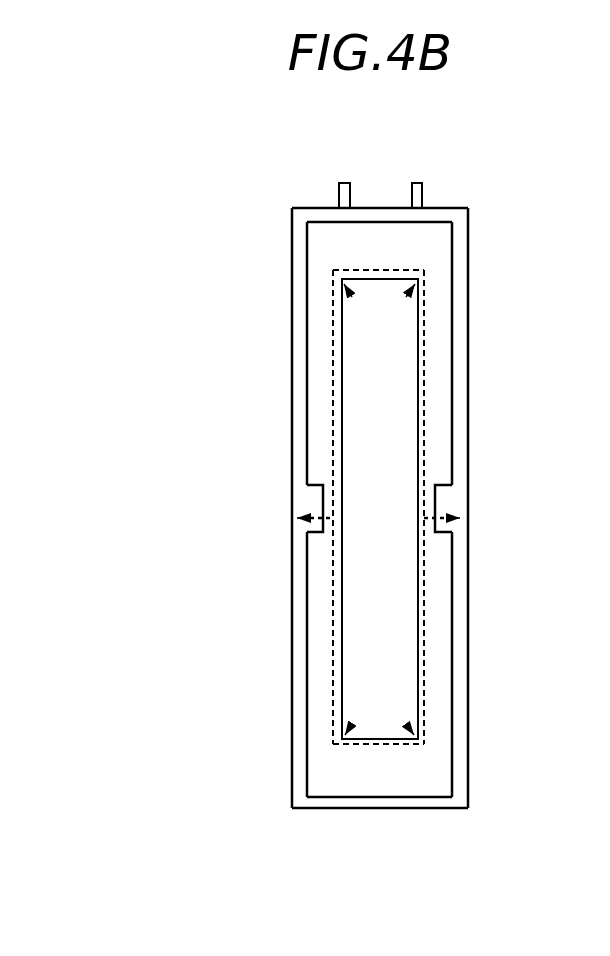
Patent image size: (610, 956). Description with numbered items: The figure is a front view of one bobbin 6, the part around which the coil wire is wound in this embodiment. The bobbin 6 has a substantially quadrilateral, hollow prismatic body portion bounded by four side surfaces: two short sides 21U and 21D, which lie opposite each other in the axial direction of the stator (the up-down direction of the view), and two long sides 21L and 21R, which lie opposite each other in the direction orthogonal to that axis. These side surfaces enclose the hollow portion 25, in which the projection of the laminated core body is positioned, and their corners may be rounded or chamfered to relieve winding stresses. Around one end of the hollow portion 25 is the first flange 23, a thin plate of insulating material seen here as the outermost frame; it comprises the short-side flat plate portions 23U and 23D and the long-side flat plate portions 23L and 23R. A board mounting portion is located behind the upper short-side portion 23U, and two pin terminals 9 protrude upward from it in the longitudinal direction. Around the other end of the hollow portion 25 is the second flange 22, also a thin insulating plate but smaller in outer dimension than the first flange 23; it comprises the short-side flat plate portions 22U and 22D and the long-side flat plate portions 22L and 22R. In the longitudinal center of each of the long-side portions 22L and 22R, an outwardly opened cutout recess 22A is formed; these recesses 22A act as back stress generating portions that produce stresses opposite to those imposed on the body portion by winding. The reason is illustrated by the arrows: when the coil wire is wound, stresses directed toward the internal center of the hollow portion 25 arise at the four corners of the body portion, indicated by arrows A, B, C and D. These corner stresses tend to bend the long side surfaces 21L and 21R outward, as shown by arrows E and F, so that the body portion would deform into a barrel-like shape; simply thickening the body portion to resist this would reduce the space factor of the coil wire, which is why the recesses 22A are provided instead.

The bobbin 6 is at (487, 306).
The pin terminal 9 is at (339, 193).
The first flange 23 is at (290, 336).
The short-side flat plate portion 23U is at (456, 218).
The long-side flat plate portion 23L is at (298, 383).
The long-side flat plate portion 23R is at (462, 688).
The short-side flat plate portion 23D is at (452, 803).
The second flange 22 is at (305, 607).
The short-side flat plate portion 22U is at (318, 244).
The long-side flat plate portion 22L is at (325, 695).
The long-side flat plate portion 22R is at (438, 598).
The short-side flat plate portion 22D is at (318, 773).
The cutout recess 22A is at (323, 506).
The side surface 21U is at (386, 270).
The side surface 21L is at (333, 430).
The side surface 21R is at (425, 397).
The side surface 21D is at (378, 750).
The hollow portion 25 is at (366, 519).
The arrow A is at (352, 297).
The arrow B is at (406, 297).
The arrow C is at (352, 724).
The arrow D is at (406, 724).
The arrow E is at (297, 522).
The arrow F is at (462, 522).